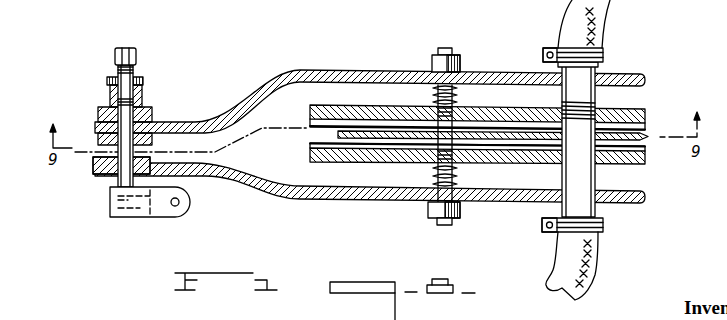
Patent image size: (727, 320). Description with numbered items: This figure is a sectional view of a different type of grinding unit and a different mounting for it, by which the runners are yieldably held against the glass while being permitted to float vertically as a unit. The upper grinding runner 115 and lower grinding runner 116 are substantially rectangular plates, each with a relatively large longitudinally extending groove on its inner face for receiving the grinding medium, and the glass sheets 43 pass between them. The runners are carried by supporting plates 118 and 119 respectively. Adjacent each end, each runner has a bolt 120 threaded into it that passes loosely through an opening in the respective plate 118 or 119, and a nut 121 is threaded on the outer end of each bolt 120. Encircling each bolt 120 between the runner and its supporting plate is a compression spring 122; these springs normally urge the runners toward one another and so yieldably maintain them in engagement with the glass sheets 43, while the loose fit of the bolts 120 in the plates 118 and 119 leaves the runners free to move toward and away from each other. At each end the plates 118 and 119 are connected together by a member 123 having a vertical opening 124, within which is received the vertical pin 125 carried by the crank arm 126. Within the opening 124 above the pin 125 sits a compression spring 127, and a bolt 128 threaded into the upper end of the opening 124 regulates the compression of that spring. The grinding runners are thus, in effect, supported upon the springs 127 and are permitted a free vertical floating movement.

The glass sheets 43 is at (645, 135).
The upper grinding runner 115 is at (477, 117).
The lower grinding runner 116 is at (483, 160).
The supporting plate 118 is at (303, 70).
The supporting plate 119 is at (293, 188).
The bolt 120 is at (450, 48).
The nut 121 is at (433, 62).
The compression spring 122 is at (433, 97).
The member 123 is at (147, 112).
The vertical opening 124 is at (112, 158).
The vertical pin 125 is at (115, 182).
The crank arm 126 is at (126, 218).
The compression spring 127 is at (110, 110).
The bolt 128 is at (115, 57).